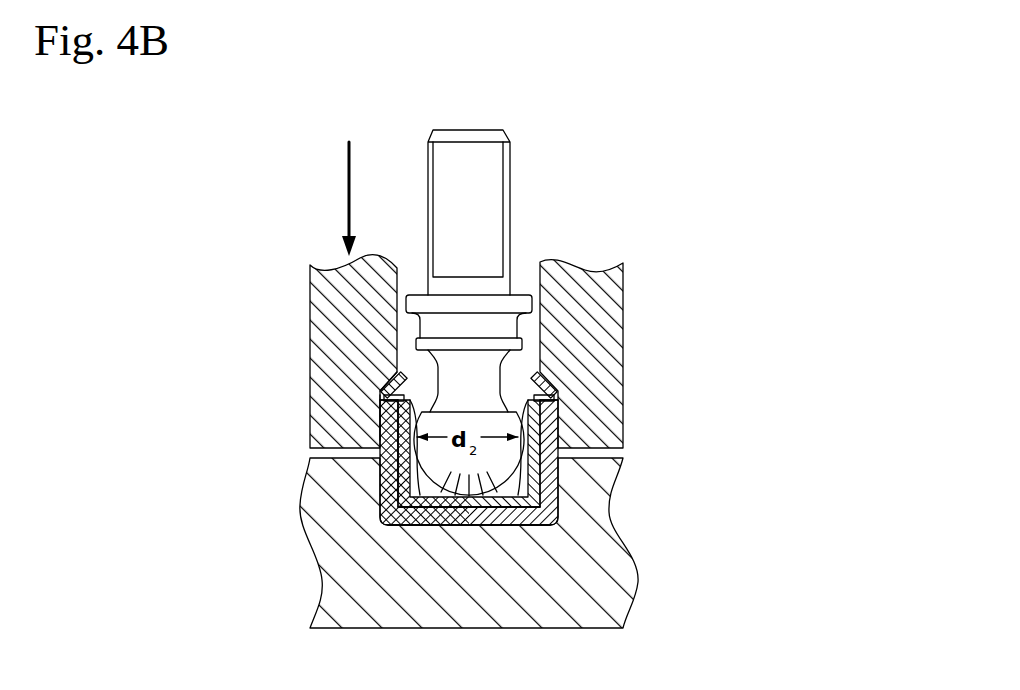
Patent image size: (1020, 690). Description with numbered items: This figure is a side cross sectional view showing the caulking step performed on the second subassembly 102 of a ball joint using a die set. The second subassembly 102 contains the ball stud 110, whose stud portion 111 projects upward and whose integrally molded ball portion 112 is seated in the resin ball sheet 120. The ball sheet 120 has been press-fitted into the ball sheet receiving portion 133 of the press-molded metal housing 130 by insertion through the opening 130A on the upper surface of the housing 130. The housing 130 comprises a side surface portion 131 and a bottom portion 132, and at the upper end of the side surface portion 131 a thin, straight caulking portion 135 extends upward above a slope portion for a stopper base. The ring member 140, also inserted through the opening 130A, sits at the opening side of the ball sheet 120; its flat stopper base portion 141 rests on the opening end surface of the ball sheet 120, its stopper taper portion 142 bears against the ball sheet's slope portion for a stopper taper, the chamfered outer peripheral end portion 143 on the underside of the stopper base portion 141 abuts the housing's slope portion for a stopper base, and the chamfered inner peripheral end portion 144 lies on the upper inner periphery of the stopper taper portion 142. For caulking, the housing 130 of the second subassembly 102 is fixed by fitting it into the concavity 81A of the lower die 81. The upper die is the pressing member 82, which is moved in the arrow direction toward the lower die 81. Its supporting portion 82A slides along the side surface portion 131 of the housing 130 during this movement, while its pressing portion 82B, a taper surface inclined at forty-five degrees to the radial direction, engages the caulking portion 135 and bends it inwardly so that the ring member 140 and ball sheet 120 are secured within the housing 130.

The second subassembly 102 is at (504, 377).
The ball stud 110 is at (512, 190).
The stud portion 111 is at (492, 237).
The ball sheet 120 is at (437, 497).
The housing 130 is at (464, 458).
The opening 130A is at (414, 376).
The side surface portion 131 is at (550, 500).
The bottom portion 132 is at (520, 518).
The ball sheet receiving portion 133 is at (405, 470).
The caulking portion 135 is at (378, 380).
The ring member 140 is at (519, 390).
The stopper base portion 141 is at (545, 383).
The stopper taper portion 142 is at (545, 407).
The outer peripheral end portion 143 is at (382, 393).
The inner peripheral end portion 144 is at (392, 408).
The lower die 81 is at (472, 543).
The concavity 81A is at (460, 508).
The pressing member 82 is at (465, 351).
The supporting portion 82A is at (380, 417).
The pressing portion 82B is at (395, 371).
The ball portion 112 is at (552, 496).